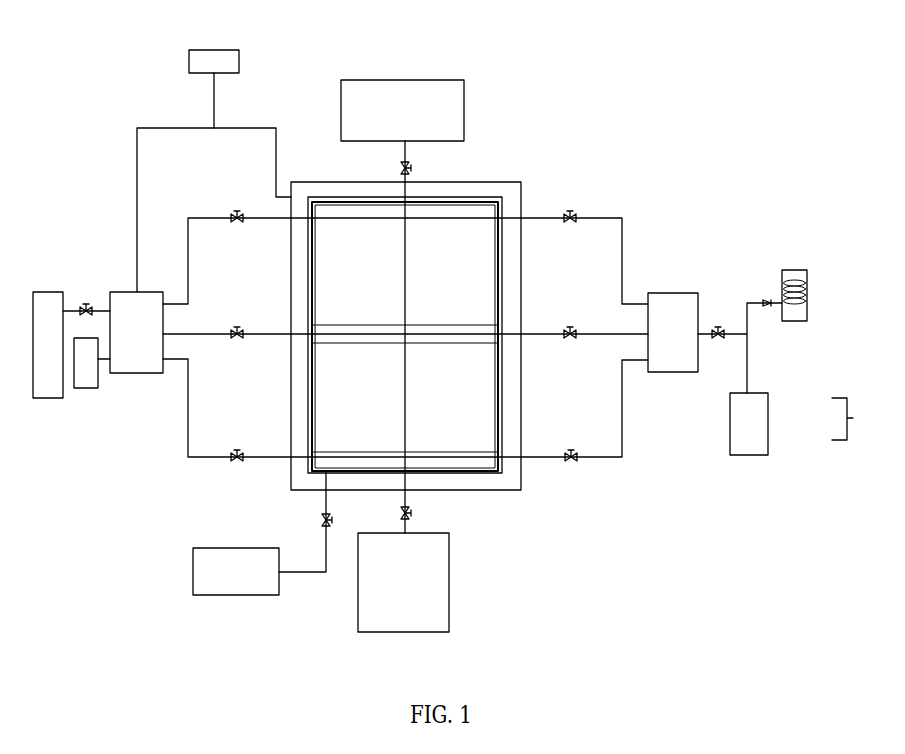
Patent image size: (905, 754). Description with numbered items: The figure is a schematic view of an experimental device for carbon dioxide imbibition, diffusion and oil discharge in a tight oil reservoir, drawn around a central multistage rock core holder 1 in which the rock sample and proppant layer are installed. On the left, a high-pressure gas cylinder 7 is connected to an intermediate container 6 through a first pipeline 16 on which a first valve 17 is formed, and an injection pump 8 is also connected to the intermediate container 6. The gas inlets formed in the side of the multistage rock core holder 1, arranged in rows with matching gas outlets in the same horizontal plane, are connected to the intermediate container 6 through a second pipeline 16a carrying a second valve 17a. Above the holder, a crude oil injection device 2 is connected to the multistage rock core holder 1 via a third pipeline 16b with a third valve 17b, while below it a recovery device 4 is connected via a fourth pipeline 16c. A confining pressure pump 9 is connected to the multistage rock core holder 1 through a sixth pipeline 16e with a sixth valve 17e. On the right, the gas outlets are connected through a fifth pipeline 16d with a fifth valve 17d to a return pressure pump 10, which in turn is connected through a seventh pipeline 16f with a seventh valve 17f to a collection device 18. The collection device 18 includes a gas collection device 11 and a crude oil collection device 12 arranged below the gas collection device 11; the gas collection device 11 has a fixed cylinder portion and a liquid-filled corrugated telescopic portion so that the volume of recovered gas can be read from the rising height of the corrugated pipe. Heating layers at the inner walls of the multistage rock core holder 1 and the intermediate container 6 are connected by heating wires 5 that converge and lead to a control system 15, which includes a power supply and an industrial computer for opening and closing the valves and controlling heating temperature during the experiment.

The multistage rock core holder 1 is at (521, 198).
The crude oil injection device 2 is at (438, 105).
The recovery device 4 is at (423, 580).
The heating wire 5 is at (160, 128).
The intermediate container 6 is at (135, 304).
The high-pressure gas cylinder 7 is at (40, 308).
The injection pump 8 is at (85, 363).
The confining pressure pump 9 is at (235, 560).
The return pressure pump 10 is at (675, 292).
The gas collection device 11 is at (793, 317).
The crude oil collection device 12 is at (748, 448).
The control system 15 is at (222, 63).
The first pipeline 16 is at (70, 305).
The first valve 17 is at (92, 304).
The second pipeline 16a is at (187, 228).
The second valve 17a is at (240, 208).
The third pipeline 16b is at (405, 152).
The third valve 17b is at (410, 168).
The fourth pipeline 16c is at (406, 495).
The fifth pipeline 16d is at (611, 333).
The fifth valve 17d is at (576, 216).
The sixth pipeline 16e is at (298, 575).
The sixth valve 17e is at (330, 523).
The seventh pipeline 16f is at (738, 331).
The seventh valve 17f is at (718, 325).
The collection device 18 is at (853, 419).